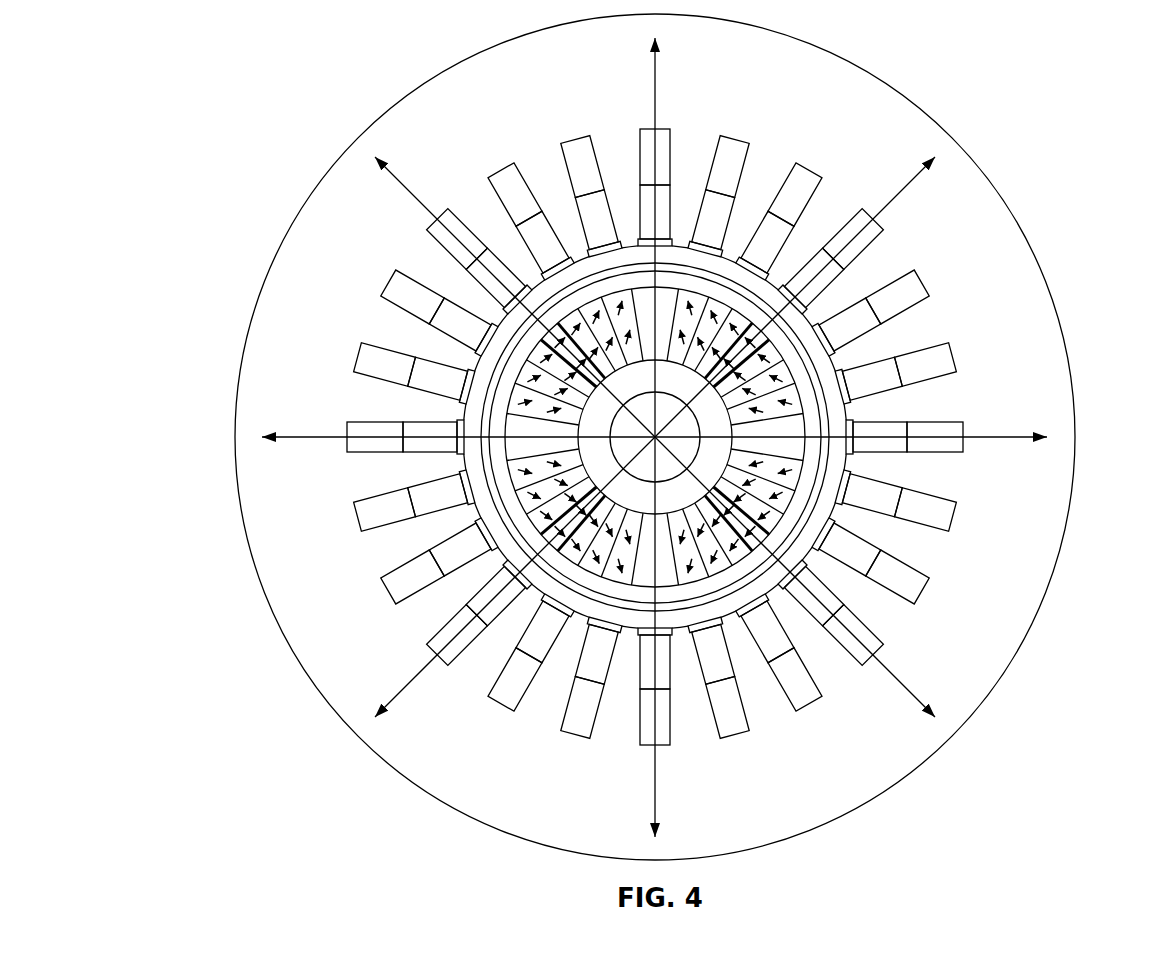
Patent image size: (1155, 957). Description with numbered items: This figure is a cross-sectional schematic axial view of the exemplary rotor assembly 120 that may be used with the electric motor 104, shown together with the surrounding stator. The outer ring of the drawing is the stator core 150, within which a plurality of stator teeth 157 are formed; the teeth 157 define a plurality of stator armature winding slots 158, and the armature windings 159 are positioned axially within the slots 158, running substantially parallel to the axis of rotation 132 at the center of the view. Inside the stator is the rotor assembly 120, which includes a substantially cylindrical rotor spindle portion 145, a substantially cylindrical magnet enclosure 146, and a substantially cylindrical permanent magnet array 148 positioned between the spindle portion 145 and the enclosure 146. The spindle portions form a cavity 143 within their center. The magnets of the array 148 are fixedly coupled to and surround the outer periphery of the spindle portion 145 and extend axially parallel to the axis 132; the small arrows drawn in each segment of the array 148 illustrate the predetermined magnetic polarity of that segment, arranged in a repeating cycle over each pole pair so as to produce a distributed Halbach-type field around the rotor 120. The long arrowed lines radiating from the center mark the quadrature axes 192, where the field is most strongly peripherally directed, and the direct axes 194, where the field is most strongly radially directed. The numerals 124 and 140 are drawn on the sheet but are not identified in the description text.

The electric motor 104 is at (148, 113).
The rotor assembly 120 is at (160, 180).
The air gap 124 is at (810, 480).
The axis of rotation 132 is at (655, 437).
The rotor 140 is at (197, 366).
The cavity 143 is at (643, 410).
The rotor spindle portion 145 is at (504, 396).
The magnet enclosure 146 is at (500, 482).
The permanent magnet array 148 is at (543, 547).
The stator core 150 is at (1051, 150).
The stator teeth 157 is at (862, 275).
The stator armature winding slots 158 is at (947, 357).
The armature windings 159 is at (947, 362).
The quadrature axes 192 is at (402, 184).
The direct axes 194 is at (657, 72).